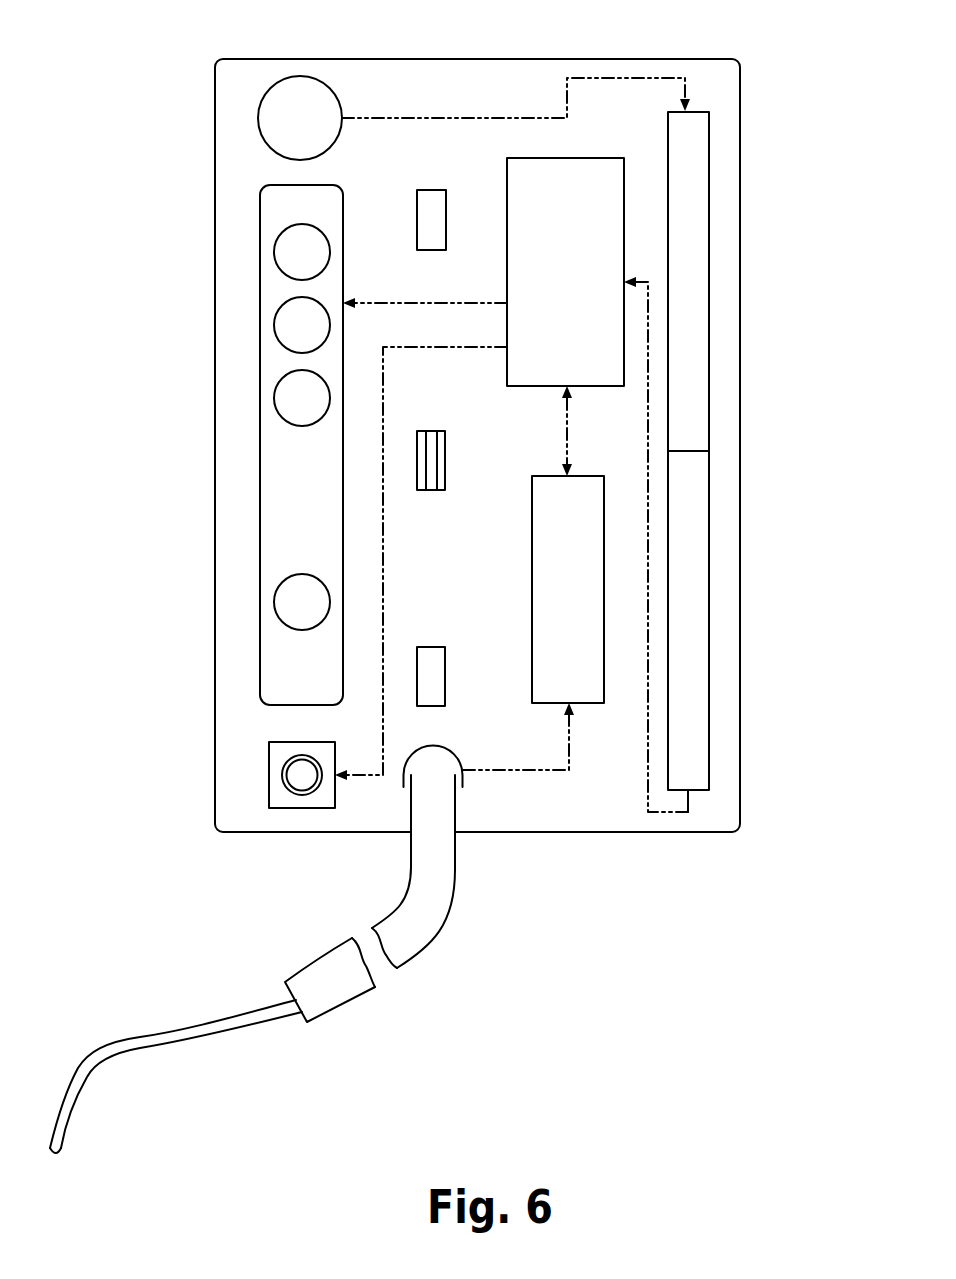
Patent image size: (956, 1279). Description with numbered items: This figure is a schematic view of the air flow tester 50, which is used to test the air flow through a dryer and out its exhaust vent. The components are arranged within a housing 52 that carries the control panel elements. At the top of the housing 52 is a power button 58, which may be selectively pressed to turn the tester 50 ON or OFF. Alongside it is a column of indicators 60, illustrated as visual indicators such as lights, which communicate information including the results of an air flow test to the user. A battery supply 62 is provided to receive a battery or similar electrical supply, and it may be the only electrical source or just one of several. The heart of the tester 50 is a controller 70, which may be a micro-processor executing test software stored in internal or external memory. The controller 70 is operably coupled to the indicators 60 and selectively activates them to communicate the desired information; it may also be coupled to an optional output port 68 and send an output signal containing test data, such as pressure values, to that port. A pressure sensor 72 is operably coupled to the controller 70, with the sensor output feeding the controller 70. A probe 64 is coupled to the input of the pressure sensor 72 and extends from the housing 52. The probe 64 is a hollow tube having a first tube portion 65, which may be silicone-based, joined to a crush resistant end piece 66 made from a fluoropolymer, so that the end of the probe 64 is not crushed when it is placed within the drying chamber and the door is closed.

The air flow tester 50 is at (115, 96).
The housing 52 is at (204, 635).
The power button 58 is at (275, 85).
The indicators 60 is at (249, 296).
The battery supply 62 is at (687, 228).
The probe 64 is at (342, 1021).
The first tube portion 65 is at (423, 933).
The crush resistant end piece 66 is at (232, 1023).
The output port 68 is at (295, 776).
The controller 70 is at (603, 158).
The pressure sensor 72 is at (592, 703).